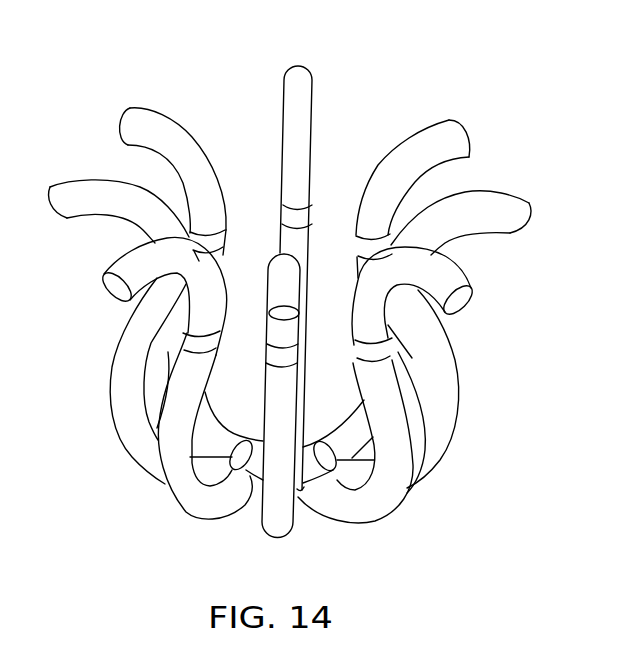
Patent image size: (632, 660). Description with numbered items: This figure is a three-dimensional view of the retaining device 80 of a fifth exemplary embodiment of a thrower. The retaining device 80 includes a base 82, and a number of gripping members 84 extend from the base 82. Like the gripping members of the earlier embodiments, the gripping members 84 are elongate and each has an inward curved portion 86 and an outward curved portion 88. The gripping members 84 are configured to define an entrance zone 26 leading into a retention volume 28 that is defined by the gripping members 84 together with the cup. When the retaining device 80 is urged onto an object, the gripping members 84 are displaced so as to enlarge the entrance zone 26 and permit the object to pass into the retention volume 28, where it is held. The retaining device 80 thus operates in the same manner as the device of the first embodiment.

The entrance zone 26 is at (347, 116).
The retention volume 28 is at (254, 208).
The retaining device 80 is at (530, 78).
The base 82 is at (300, 500).
The gripping members 84 is at (91, 179).
The inward curved portion 86 is at (172, 508).
The outward curved portion 88 is at (486, 230).